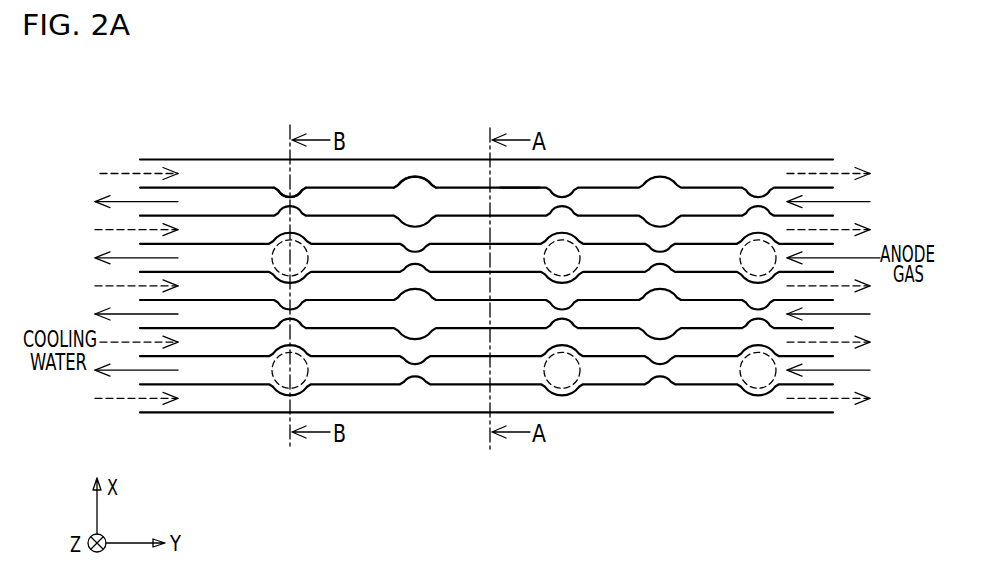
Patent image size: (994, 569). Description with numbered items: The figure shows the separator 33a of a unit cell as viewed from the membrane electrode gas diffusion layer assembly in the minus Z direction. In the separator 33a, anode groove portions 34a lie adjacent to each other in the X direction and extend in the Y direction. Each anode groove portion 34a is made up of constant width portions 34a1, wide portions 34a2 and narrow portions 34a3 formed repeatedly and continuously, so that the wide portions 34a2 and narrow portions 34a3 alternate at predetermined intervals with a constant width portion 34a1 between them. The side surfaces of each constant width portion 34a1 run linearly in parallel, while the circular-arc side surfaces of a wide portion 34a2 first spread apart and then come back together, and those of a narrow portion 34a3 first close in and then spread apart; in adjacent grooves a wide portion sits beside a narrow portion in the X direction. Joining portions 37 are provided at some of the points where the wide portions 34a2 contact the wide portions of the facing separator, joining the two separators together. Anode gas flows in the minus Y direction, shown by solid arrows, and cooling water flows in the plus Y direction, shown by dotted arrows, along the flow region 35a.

The anode groove portion 34a is at (253, 201).
The constant width portion 34a1 is at (522, 206).
The wide portion 34a2 is at (415, 193).
The narrow portion 34a3 is at (284, 190).
The joining portion 37 is at (308, 248).
The cooling water flow path 35a is at (708, 172).
The separator 33a is at (810, 414).